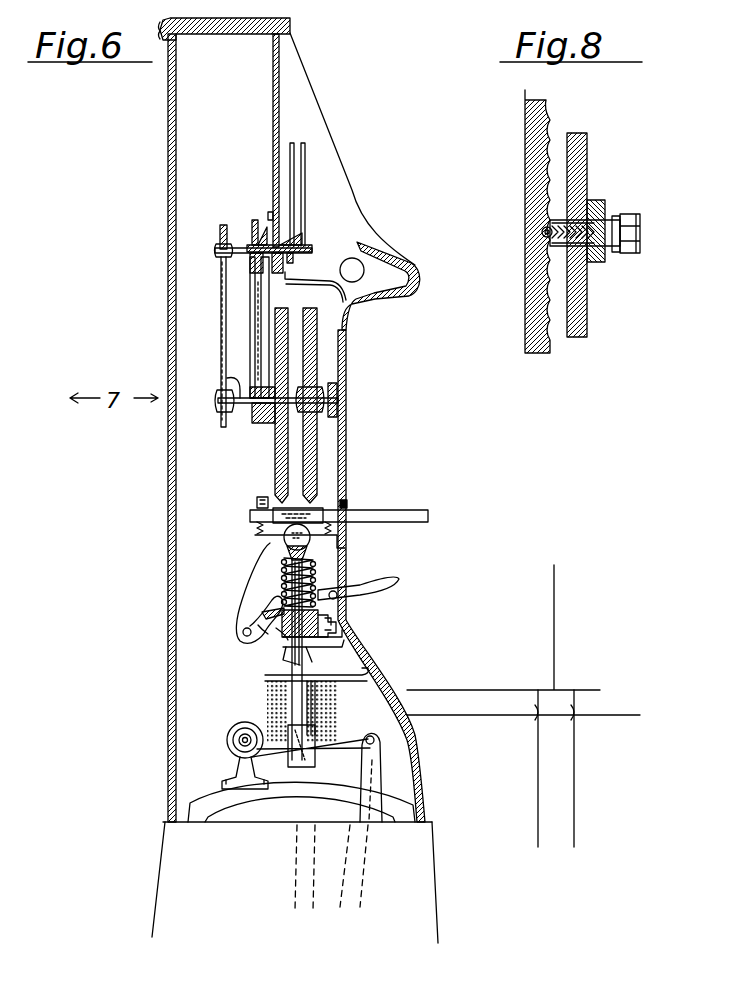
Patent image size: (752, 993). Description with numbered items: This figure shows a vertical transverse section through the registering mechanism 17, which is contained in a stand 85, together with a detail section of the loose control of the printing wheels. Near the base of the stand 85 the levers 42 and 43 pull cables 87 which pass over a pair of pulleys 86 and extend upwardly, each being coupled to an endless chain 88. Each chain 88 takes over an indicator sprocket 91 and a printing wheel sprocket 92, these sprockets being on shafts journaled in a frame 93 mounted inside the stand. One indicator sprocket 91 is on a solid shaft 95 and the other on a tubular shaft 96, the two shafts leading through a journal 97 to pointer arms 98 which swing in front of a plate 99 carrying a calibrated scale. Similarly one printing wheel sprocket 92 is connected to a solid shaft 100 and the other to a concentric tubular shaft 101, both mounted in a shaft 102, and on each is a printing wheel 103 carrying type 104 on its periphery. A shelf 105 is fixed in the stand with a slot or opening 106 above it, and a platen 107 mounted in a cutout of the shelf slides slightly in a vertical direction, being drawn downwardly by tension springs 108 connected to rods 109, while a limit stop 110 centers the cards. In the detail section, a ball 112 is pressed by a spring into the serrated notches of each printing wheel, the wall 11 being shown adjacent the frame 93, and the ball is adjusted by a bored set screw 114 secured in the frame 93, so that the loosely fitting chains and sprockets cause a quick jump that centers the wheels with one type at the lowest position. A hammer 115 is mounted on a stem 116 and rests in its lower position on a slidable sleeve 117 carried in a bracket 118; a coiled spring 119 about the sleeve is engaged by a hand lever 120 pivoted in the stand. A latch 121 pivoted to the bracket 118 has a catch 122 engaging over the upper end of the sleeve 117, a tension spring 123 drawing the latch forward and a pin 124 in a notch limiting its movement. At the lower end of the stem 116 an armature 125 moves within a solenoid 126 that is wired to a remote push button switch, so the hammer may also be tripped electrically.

In FIG. 6, the registering mechanism 17 is at (359, 410).
In FIG. 6, the stand 85 is at (168, 560).
In FIG. 6, the plate 99 is at (279, 124).
In FIG. 6, the pointer arms 98 is at (304, 180).
In FIG. 6, the tubular shaft 96 is at (296, 243).
In FIG. 6, the solid shaft 95 is at (240, 245).
In FIG. 6, the indicator sprocket 91 is at (220, 232).
In FIG. 6, the endless chain 88 is at (221, 318).
In FIG. 6, the printing wheel sprocket 92 is at (222, 424).
In FIG. 6, the solid shaft 100 is at (228, 378).
In FIG. 6, the journal 97 is at (258, 272).
In FIG. 6, the tubular shaft 101 is at (258, 410).
In FIG. 6, the shaft 102 is at (268, 424).
In FIG. 6, the frame 93 is at (288, 284).
In FIG. 8, the frame 93 is at (588, 148).
In FIG. 6, the printing wheel 103 is at (317, 358).
In FIG. 6, the type 104 is at (312, 497).
In FIG. 6, the shelf 105 is at (398, 512).
In FIG. 6, the slot or opening 106 is at (330, 516).
In FIG. 6, the limit stop 110 is at (258, 508).
In FIG. 6, the platen 107 is at (258, 530).
In FIG. 6, the tension springs 108 is at (270, 540).
In FIG. 6, the rods 109 is at (290, 550).
In FIG. 6, the hammer 115 is at (292, 566).
In FIG. 6, the coiled spring 119 is at (316, 582).
In FIG. 6, the hand lever 120 is at (378, 593).
In FIG. 6, the latch 121 is at (240, 634).
In FIG. 6, the catch 122 is at (266, 602).
In FIG. 6, the bracket 118 is at (338, 628).
In FIG. 6, the slidable sleeve 117 is at (312, 650).
In FIG. 6, the tension spring 123 is at (288, 642).
In FIG. 6, the pin 124 is at (264, 636).
In FIG. 6, the stem 116 is at (272, 676).
In FIG. 6, the solenoid 126 is at (268, 705).
In FIG. 6, the armature 125 is at (338, 712).
In FIG. 6, the lever 43 is at (316, 775).
In FIG. 6, the pulleys 86 is at (228, 748).
In FIG. 6, the lever 42 is at (372, 776).
In FIG. 6, the cables 87 is at (295, 862).
In FIG. 8, the wall 11 is at (530, 270).
In FIG. 8, the ball 112 is at (592, 200).
In FIG. 8, the set screw 114 is at (616, 252).